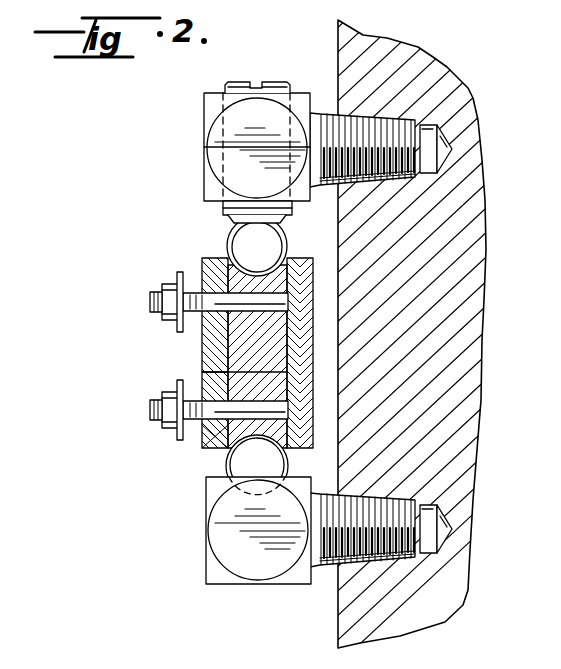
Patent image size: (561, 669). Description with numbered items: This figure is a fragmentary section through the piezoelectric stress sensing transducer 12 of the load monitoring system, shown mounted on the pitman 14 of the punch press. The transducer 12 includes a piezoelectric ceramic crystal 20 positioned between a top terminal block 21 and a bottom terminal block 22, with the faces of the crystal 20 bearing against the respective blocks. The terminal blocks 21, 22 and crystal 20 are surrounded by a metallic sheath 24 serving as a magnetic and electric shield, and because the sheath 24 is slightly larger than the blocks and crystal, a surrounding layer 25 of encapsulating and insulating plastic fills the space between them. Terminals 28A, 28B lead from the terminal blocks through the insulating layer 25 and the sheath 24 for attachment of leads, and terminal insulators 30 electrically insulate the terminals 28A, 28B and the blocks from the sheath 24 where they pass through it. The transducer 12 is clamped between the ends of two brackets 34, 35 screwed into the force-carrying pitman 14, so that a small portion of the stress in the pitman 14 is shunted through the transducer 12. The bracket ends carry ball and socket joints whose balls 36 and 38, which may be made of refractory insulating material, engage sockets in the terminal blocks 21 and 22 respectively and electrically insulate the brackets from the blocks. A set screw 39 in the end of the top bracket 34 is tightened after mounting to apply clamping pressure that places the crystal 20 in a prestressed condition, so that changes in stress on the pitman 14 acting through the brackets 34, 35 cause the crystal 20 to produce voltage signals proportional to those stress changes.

The piezoelectric stress sensing transducer 12 is at (205, 351).
The pitman 14 is at (475, 200).
The piezoelectric ceramic crystal 20 is at (205, 350).
The top terminal block 21 is at (230, 258).
The bottom terminal block 22 is at (205, 450).
The metallic sheath 24 is at (322, 254).
The insulating layer 25 is at (291, 448).
The terminal 28A is at (150, 302).
The terminal 28B is at (150, 410).
The terminal insulator 30 is at (196, 278).
The top bracket 34 is at (212, 162).
The bottom bracket 35 is at (215, 574).
The ball 36 is at (284, 241).
The ball 38 is at (208, 482).
The set screw 39 is at (245, 82).